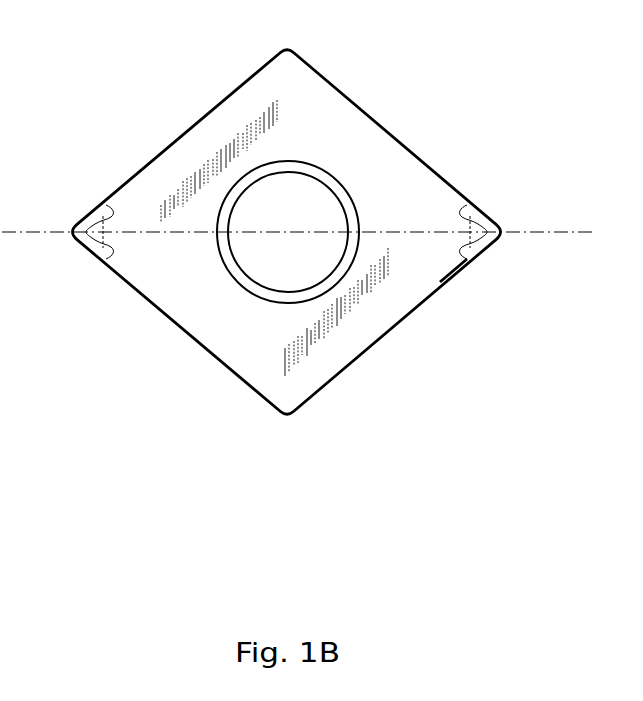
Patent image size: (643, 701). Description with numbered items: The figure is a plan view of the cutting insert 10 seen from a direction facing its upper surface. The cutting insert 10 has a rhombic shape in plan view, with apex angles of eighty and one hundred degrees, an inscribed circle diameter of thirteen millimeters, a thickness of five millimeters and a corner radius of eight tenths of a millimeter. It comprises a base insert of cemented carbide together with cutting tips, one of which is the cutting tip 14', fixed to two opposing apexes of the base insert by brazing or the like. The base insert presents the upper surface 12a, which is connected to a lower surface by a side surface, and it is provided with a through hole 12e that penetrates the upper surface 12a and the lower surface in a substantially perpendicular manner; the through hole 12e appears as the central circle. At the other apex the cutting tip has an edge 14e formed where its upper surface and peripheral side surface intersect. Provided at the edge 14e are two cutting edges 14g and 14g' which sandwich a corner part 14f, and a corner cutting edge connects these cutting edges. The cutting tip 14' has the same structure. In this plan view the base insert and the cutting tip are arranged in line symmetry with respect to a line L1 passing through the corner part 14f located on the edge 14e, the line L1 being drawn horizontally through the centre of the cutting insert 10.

The cutting insert 10 is at (222, 404).
The upper surface 12a is at (333, 133).
The through hole 12e is at (260, 267).
The cutting tip 14' is at (69, 193).
The edge 14e is at (470, 262).
The corner part 14f is at (503, 231).
The cutting edge 14g is at (483, 177).
The cutting edge 14g' is at (521, 269).
The line L1 is at (567, 235).